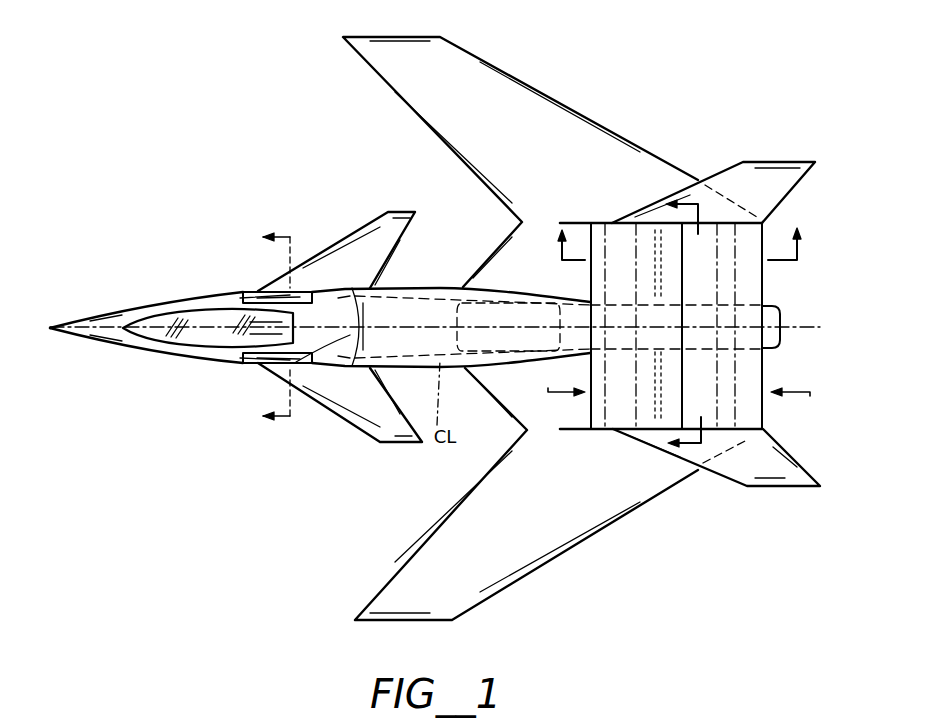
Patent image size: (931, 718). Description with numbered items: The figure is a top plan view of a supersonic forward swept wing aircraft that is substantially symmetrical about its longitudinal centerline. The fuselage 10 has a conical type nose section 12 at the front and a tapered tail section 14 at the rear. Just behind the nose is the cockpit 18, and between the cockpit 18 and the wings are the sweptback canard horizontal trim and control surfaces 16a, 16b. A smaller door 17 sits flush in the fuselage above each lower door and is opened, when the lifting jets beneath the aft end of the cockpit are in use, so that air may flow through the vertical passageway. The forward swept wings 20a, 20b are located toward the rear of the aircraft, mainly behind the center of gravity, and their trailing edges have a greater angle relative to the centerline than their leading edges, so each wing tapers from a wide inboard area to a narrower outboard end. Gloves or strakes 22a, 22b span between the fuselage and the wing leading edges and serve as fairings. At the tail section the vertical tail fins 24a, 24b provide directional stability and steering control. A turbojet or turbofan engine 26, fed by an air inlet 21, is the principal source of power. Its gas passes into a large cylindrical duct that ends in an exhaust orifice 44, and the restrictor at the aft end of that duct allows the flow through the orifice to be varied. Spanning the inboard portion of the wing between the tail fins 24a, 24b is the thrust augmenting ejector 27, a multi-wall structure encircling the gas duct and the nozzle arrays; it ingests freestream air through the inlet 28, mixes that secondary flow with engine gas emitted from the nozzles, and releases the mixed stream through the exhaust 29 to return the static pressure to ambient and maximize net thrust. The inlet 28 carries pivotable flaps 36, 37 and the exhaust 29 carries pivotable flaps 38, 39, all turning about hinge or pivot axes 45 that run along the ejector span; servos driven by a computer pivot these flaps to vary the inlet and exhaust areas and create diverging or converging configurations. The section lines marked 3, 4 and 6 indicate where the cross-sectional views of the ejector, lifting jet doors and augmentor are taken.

The fuselage 10 is at (421, 287).
The conical type nose section 12 is at (112, 312).
The tapered tail section 14 is at (772, 305).
The sweptback canard horizontal trim and control surface 16a is at (363, 410).
The sweptback canard horizontal trim and control surface 16b is at (367, 250).
The smaller door 17 is at (283, 368).
The cockpit 18 is at (148, 338).
The forward swept wing 20a is at (428, 572).
The forward swept wing 20b is at (423, 89).
The air inlet 21 is at (290, 338).
The glove or strake 22a is at (497, 407).
The glove or strake 22b is at (493, 250).
The vertical tail fin 24a is at (713, 475).
The vertical tail fin 24b is at (710, 178).
The turbojet or turbofan engine 26 is at (498, 355).
The thrust augmenting ejector 27 is at (703, 262).
The inlet 28 is at (561, 404).
The exhaust 29 is at (794, 404).
The pivotable flap 36 is at (600, 287).
The pivotable flap 37 is at (625, 392).
The pivotable flap 38 is at (728, 403).
The pivotable flap 39 is at (752, 403).
The exhaust orifice 44 is at (778, 333).
The hinge or pivot axis 45 is at (630, 245).
The section line 3- 3 is at (692, 327).
The section line 4- 4 is at (286, 329).
The section line 6- 6 is at (678, 244).